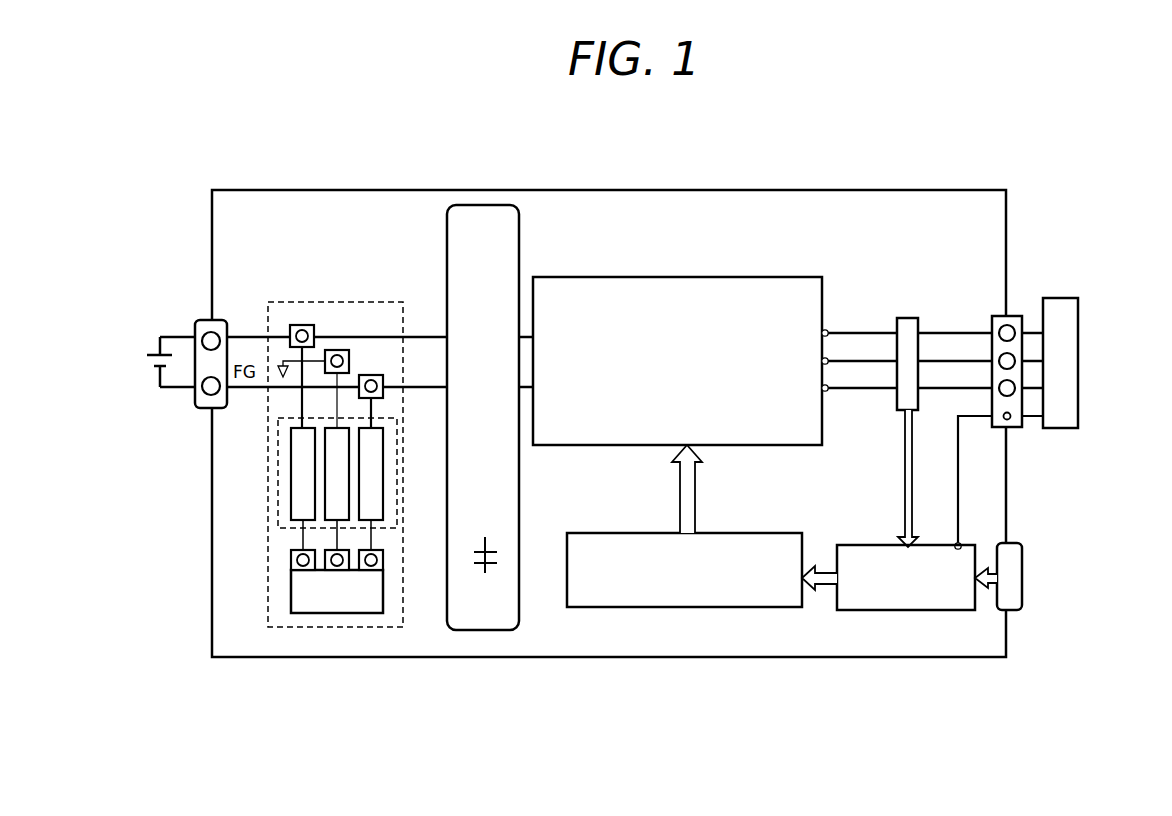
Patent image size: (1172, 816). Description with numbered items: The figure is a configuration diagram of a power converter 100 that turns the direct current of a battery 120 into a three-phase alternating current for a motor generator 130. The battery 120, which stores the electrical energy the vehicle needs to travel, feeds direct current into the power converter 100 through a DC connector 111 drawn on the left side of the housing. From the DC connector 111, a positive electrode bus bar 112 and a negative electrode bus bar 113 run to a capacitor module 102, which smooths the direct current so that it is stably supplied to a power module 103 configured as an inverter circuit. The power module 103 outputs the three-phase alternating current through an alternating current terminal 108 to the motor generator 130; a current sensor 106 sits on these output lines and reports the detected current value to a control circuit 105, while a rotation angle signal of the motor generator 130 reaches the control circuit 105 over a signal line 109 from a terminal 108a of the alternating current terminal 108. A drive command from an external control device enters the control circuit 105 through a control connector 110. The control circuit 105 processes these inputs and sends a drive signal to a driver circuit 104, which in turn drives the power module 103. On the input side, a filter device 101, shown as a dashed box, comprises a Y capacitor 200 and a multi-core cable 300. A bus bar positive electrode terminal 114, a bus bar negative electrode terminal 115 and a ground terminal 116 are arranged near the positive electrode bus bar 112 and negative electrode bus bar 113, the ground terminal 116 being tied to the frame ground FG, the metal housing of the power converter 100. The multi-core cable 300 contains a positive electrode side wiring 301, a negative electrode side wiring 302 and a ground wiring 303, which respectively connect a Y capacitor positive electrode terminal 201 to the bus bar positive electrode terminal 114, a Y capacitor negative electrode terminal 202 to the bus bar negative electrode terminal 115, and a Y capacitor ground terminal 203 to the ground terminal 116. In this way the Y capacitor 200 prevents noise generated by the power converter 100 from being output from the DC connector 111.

The power converter 100 is at (1007, 206).
The filter device 101 is at (282, 302).
The capacitor module 102 is at (478, 205).
The power module 103 is at (670, 277).
The driver circuit 104 is at (685, 607).
The control circuit 105 is at (900, 610).
The current sensor 106 is at (903, 318).
The alternating current terminal 108 is at (1010, 316).
The connector terminal 108a is at (1022, 422).
The signal line 109 is at (958, 513).
The control connector 110 is at (1020, 610).
The direct current connector 111 is at (208, 320).
The positive electrode bus bar 112 is at (427, 337).
The negative electrode bus bar 113 is at (428, 387).
The bus bar positive electrode terminal 114 is at (300, 325).
The bus bar negative electrode terminal 115 is at (372, 375).
The ground terminal 116 is at (336, 350).
The battery 120 is at (155, 352).
The motor generator 130 is at (1065, 298).
The Y capacitor 200 is at (291, 595).
The Y capacitor positive electrode terminal 201 is at (291, 562).
The Y capacitor negative electrode terminal 202 is at (383, 560).
The Y capacitor ground terminal 203 is at (338, 570).
The multi-core cable 300 is at (278, 508).
The positive electrode side wiring 301 is at (291, 468).
The negative electrode side wiring 302 is at (383, 492).
The ground wiring 303 is at (349, 455).